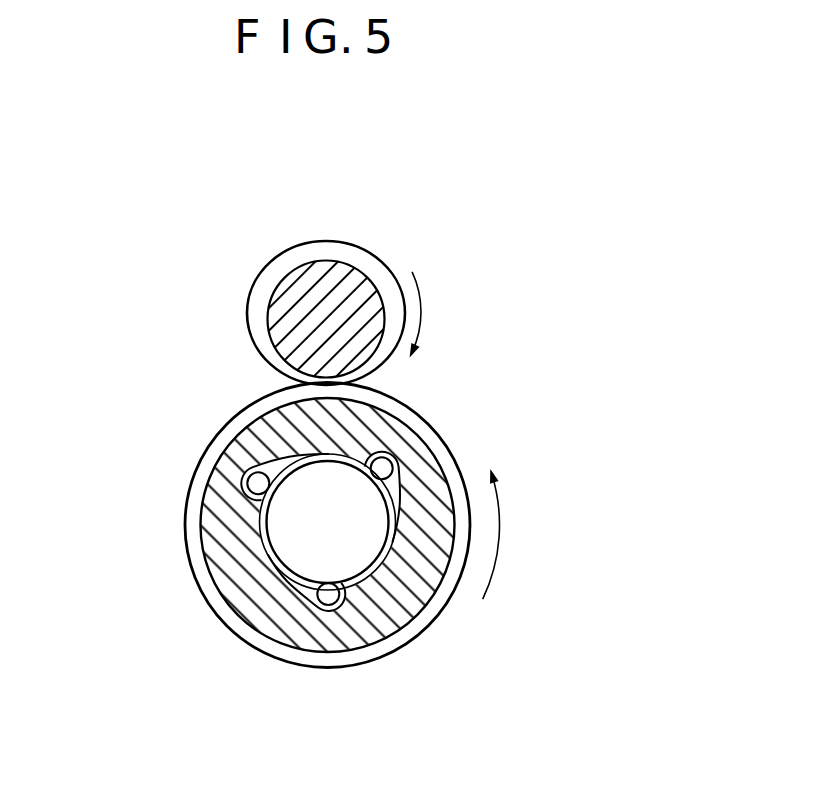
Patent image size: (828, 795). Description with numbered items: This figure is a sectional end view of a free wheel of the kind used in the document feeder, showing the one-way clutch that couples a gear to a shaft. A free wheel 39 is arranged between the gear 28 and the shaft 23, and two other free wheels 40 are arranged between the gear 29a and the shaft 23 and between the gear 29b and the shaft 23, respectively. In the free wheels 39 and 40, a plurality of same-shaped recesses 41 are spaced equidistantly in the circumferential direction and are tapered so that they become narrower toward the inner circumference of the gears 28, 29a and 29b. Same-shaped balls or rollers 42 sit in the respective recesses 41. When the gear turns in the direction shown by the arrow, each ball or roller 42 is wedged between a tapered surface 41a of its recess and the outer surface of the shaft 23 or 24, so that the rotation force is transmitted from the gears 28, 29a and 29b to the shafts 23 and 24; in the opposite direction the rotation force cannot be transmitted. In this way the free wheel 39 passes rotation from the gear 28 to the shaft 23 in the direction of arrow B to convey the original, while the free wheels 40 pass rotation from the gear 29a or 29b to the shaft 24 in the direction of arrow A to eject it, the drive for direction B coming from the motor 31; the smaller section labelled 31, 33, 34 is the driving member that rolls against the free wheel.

The motor 31 is at (408, 285).
The roller 33 is at (408, 285).
The roller 34 is at (370, 263).
The gear 28 is at (454, 524).
The gear 29a is at (454, 524).
The gear 29b is at (454, 524).
The free wheel 39 is at (269, 525).
The free wheel 40 is at (184, 483).
The shaft 23 is at (220, 522).
The shaft 24 is at (283, 537).
The recess 41 is at (393, 466).
The tapered surface 41a is at (258, 474).
The ball or roller 42 is at (250, 468).